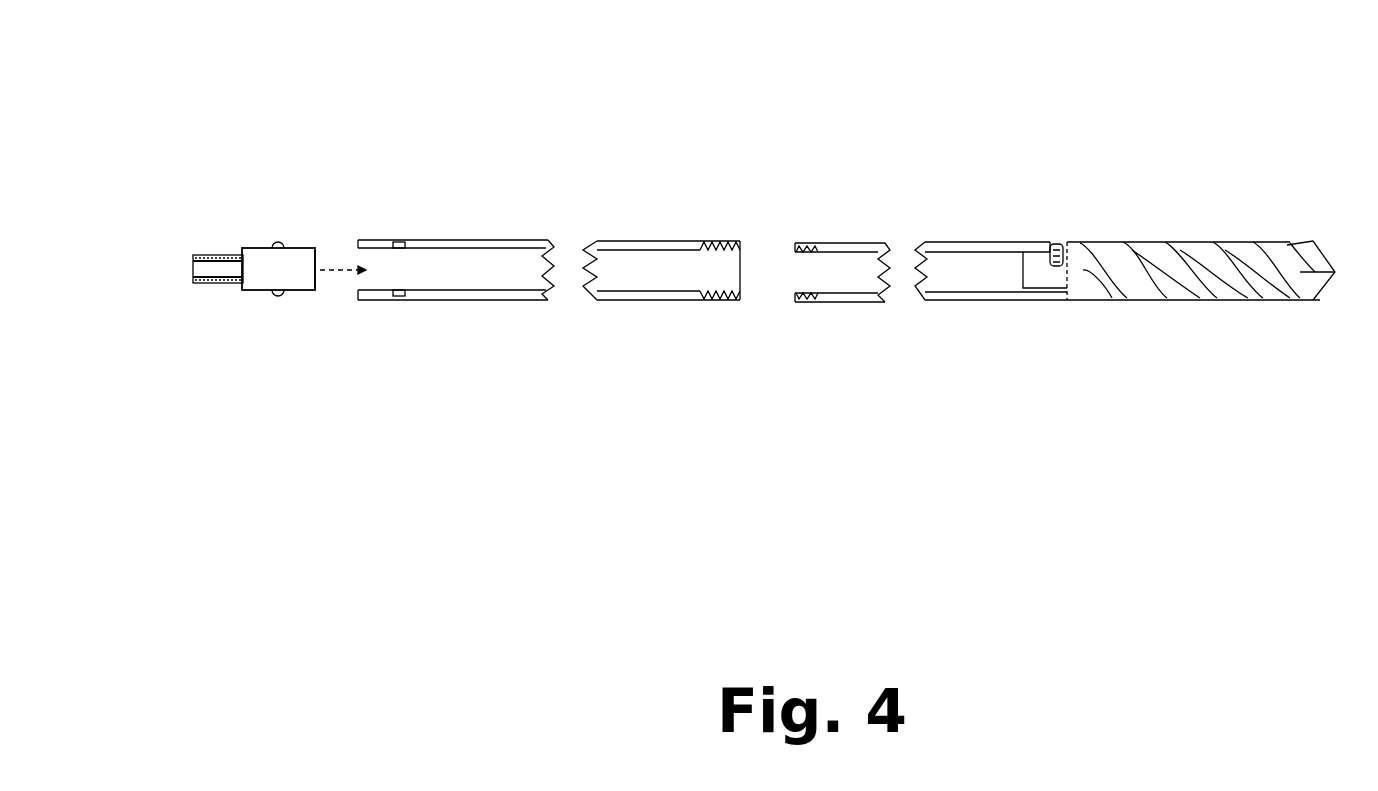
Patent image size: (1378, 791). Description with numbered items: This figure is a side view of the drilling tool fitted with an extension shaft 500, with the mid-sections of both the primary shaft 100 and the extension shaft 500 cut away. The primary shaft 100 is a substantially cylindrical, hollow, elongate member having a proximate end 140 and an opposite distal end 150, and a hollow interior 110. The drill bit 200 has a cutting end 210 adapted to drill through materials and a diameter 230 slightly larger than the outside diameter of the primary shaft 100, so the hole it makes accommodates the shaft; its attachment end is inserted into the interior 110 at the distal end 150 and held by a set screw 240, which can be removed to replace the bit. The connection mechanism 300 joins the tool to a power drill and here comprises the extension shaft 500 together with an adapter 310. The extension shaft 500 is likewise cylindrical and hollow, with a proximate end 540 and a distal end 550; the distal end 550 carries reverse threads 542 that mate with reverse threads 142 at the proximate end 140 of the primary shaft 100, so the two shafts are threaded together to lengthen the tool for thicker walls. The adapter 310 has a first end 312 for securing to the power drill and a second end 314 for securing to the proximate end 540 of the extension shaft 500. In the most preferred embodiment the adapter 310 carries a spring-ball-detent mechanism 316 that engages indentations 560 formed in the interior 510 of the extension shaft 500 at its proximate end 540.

The primary shaft 100 is at (1067, 100).
The interior 110 is at (970, 272).
The proximate end 140 is at (838, 302).
The threads 142 is at (803, 243).
The distal end 150 is at (1036, 243).
The drill bit 200 is at (1213, 242).
The cutting end 210 is at (1312, 275).
The diameter 230 is at (1040, 272).
The set screw 240 is at (1058, 245).
The connection mechanism 300 is at (243, 248).
The adapter 310 is at (273, 270).
The first end 312 is at (210, 284).
The second end 314 is at (308, 292).
The spring-ball-detent mechanism 316 is at (278, 292).
The extension shaft 500 is at (740, 424).
The interior 510 is at (455, 270).
The proximate end 540 is at (373, 240).
The threads 542 is at (720, 302).
The distal end 550 is at (700, 242).
The indentations 560 is at (395, 300).